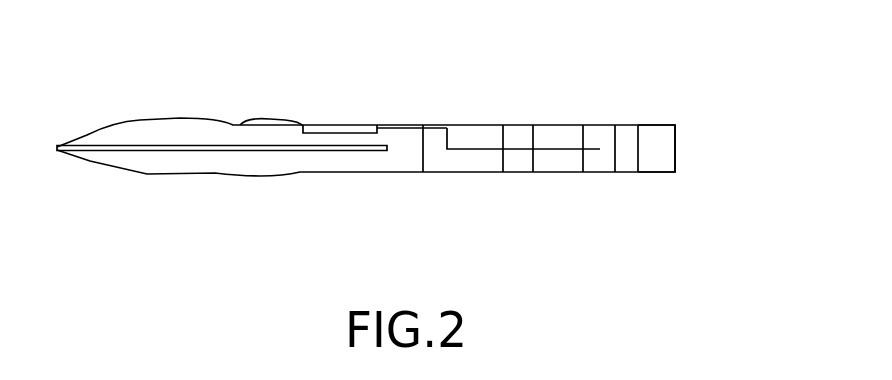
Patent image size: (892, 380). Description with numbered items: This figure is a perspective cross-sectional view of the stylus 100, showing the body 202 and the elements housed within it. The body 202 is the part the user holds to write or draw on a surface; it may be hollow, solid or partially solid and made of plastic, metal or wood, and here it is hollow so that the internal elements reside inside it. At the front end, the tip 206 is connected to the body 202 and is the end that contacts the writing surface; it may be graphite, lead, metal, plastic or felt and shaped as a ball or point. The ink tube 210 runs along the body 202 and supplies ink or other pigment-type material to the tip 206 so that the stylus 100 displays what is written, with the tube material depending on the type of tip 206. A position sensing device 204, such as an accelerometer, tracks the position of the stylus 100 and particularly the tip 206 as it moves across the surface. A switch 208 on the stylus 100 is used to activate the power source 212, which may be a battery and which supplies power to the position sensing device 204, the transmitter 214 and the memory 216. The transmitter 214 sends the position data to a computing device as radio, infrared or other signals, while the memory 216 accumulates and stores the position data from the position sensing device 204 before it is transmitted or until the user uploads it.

The stylus 100 is at (634, 72).
The body 202 is at (335, 172).
The position sensing device 204 is at (675, 150).
The tip 206 is at (57, 152).
The switch 208 is at (338, 125).
The ink tube 210 is at (237, 150).
The power source 212 is at (461, 125).
The transmitter 214 is at (627, 162).
The memory 216 is at (557, 162).